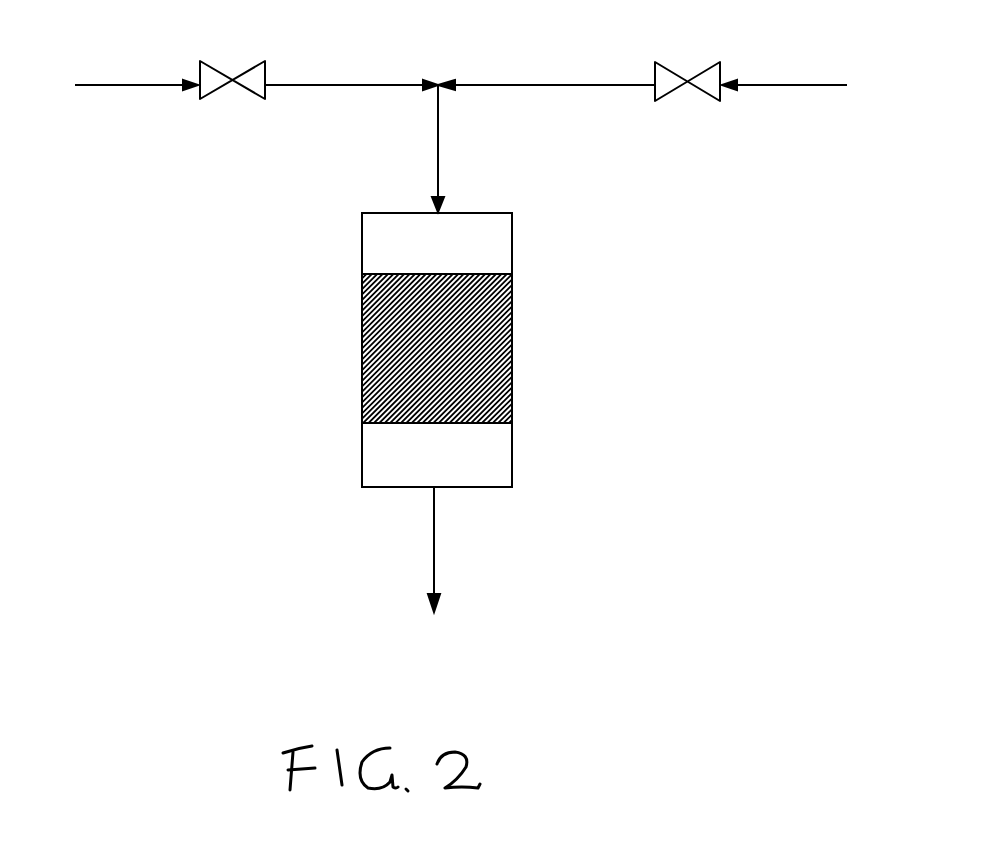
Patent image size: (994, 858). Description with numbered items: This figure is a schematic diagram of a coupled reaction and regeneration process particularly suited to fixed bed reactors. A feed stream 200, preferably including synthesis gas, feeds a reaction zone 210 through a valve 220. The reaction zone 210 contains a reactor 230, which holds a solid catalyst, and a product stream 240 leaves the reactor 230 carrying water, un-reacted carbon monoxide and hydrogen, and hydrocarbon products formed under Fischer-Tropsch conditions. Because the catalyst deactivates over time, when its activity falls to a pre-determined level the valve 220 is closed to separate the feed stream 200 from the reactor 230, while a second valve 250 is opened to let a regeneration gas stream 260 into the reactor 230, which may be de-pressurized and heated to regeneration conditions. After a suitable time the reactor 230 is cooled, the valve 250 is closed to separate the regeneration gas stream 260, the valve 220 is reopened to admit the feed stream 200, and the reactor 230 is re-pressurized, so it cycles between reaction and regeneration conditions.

The feed stream 200 is at (137, 98).
The reaction zone 210 is at (312, 337).
The valve 220 is at (225, 100).
The reactor 230 is at (513, 451).
The product stream 240 is at (423, 550).
The valve 250 is at (681, 101).
The regeneration gas stream 260 is at (808, 102).